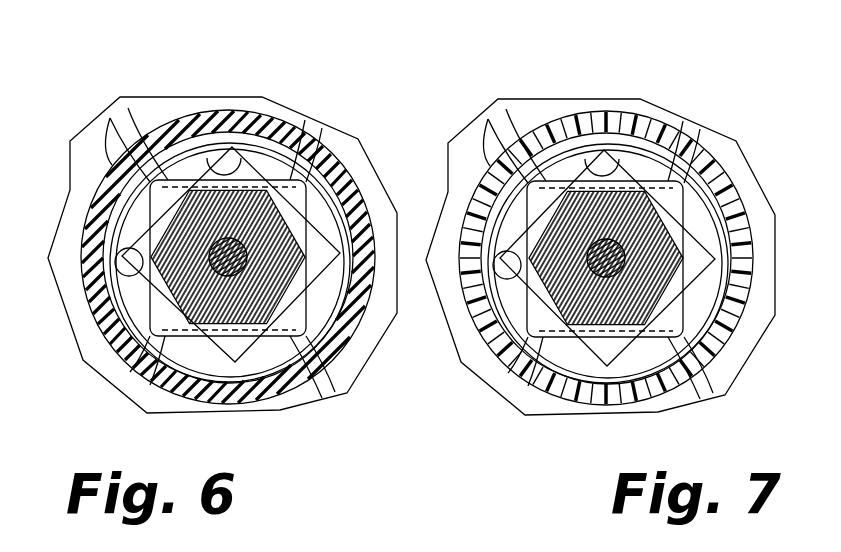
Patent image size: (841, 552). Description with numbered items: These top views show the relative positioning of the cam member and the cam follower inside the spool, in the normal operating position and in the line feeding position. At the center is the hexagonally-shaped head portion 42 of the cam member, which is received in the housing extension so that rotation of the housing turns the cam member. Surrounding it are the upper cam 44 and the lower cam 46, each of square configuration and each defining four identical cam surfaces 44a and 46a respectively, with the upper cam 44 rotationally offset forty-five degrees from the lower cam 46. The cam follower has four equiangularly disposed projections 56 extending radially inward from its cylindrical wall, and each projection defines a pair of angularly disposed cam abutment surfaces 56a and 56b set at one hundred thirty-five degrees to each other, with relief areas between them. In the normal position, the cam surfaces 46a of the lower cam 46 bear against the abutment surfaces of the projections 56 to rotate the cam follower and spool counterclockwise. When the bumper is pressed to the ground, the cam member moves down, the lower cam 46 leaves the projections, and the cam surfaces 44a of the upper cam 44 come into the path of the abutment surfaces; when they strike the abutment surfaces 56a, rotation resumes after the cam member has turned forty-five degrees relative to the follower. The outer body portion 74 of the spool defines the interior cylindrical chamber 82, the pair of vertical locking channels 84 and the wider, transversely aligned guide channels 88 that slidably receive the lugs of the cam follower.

In FIG. 6, the head portion 42 is at (347, 222).
In FIG. 7, the head portion 42 is at (705, 228).
In FIG. 6, the upper cam 44 is at (195, 130).
In FIG. 7, the upper cam 44 is at (730, 310).
In FIG. 6, the cam surfaces 44a is at (170, 150).
In FIG. 7, the cam surfaces 44a is at (570, 160).
In FIG. 6, the lower cam 46 is at (120, 130).
In FIG. 7, the lower cam 46 is at (687, 140).
In FIG. 6, the cam surfaces 46a is at (148, 130).
In FIG. 7, the cam surfaces 46a is at (533, 140).
In FIG. 6, the projections 56 is at (272, 172).
In FIG. 7, the projections 56 is at (553, 160).
In FIG. 6, the cam abutment surface 56a is at (218, 130).
In FIG. 7, the cam abutment surface 56a is at (490, 162).
In FIG. 6, the cam abutment surface 56b is at (100, 135).
In FIG. 7, the cam abutment surface 56b is at (640, 123).
In FIG. 6, the body portion 74 is at (251, 165).
In FIG. 7, the body portion 74 is at (677, 160).
In FIG. 6, the interior cylindrical chamber 82 is at (335, 180).
In FIG. 7, the interior cylindrical chamber 82 is at (703, 190).
In FIG. 6, the locking channels 84 is at (300, 145).
In FIG. 7, the locking channels 84 is at (577, 130).
In FIG. 6, the guide channels 88 is at (112, 196).
In FIG. 7, the guide channels 88 is at (737, 247).